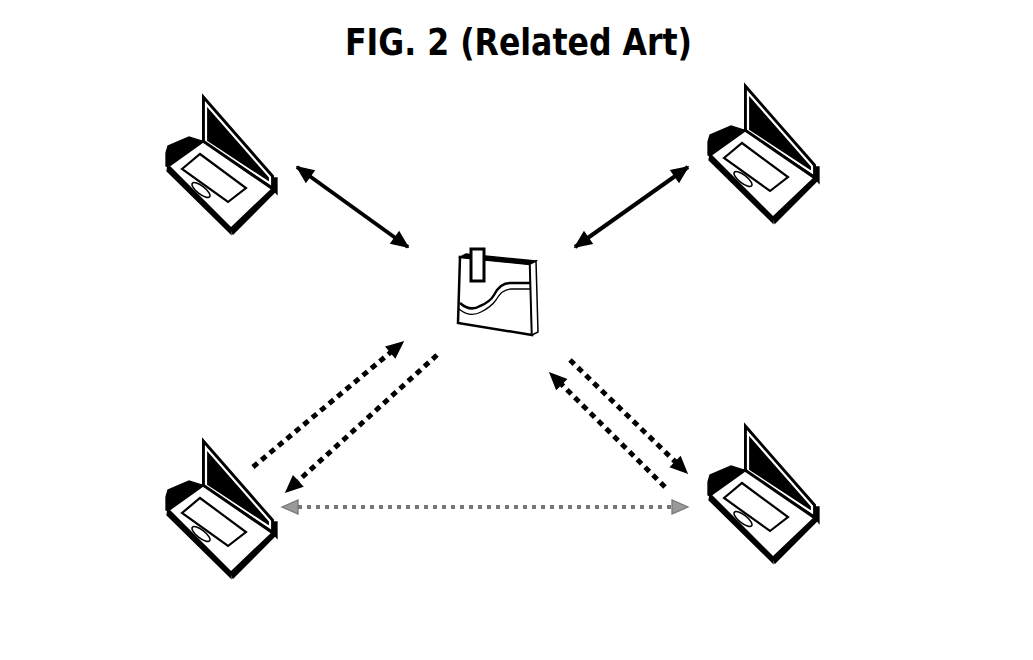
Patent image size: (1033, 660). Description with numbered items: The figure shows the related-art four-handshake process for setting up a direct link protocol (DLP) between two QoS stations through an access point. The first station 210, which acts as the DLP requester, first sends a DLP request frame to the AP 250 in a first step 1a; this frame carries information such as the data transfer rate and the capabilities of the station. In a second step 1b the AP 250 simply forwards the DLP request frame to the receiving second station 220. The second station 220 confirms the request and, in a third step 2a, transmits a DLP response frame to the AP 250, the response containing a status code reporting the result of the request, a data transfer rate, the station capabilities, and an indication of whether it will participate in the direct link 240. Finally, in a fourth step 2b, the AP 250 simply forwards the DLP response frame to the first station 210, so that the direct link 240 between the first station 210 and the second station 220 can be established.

The AP 250 is at (508, 211).
The QSTA-1 210 is at (227, 599).
The QSTA-2 220 is at (768, 589).
The direct link 240 is at (483, 544).
The DLP request frame transmission from QSTA-1 to AP 1a is at (328, 404).
The DLP request frame forwarding from AP to QSTA-2 1b is at (628, 415).
The DLP response frame transmission from QSTA-2 to AP 2a is at (601, 430).
The DLP response frame forwarding from AP to QSTA-1 2b is at (361, 423).